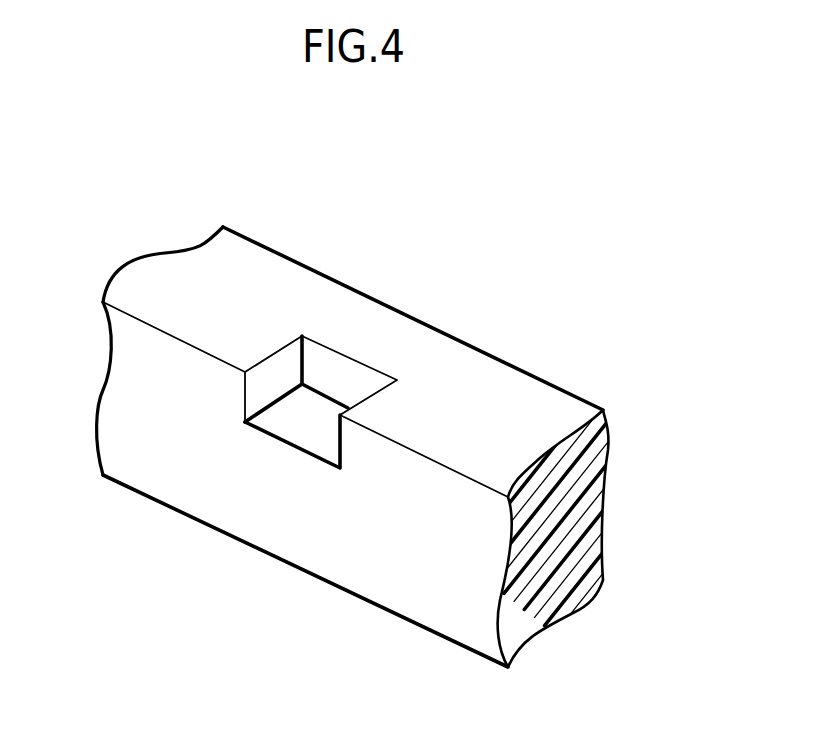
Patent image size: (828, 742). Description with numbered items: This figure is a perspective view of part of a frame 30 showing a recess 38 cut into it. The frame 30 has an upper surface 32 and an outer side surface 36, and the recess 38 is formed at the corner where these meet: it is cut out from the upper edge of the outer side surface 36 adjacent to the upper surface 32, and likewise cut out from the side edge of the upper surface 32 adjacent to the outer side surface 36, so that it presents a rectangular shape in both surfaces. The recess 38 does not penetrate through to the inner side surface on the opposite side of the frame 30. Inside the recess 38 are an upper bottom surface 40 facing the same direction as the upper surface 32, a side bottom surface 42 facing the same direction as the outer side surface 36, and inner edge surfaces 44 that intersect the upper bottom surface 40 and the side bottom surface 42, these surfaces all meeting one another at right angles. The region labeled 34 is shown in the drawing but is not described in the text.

The frame 30 is at (581, 391).
The upper surface 32 is at (482, 387).
The left end portion 34 is at (197, 350).
The outer side surface 36 is at (387, 577).
The recess 38 is at (281, 414).
The upper bottom surface 40 is at (298, 430).
The side bottom surface 42 is at (347, 373).
The inner edge surfaces 44 is at (273, 385).